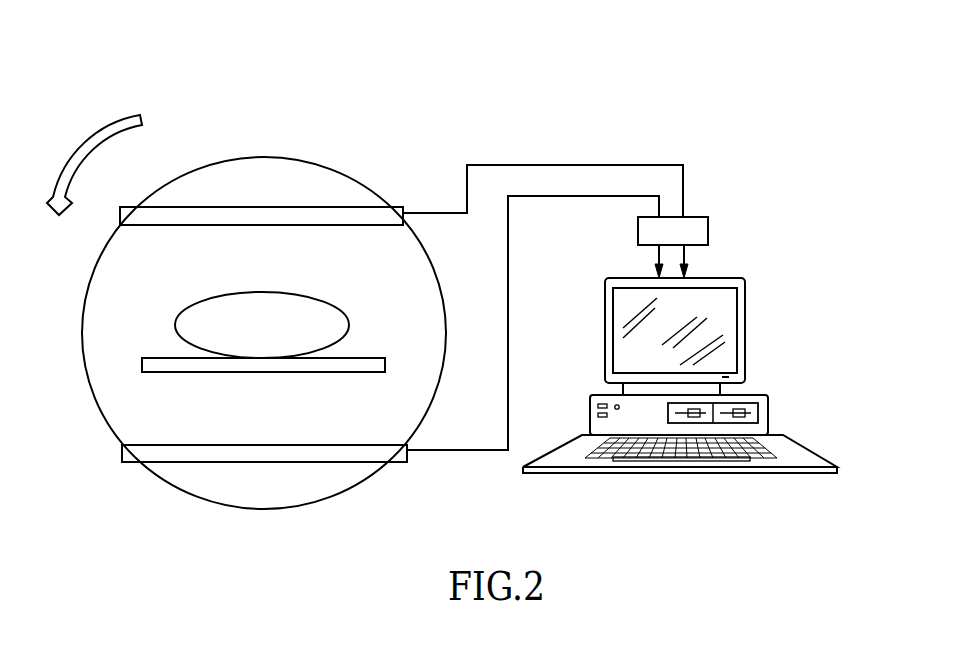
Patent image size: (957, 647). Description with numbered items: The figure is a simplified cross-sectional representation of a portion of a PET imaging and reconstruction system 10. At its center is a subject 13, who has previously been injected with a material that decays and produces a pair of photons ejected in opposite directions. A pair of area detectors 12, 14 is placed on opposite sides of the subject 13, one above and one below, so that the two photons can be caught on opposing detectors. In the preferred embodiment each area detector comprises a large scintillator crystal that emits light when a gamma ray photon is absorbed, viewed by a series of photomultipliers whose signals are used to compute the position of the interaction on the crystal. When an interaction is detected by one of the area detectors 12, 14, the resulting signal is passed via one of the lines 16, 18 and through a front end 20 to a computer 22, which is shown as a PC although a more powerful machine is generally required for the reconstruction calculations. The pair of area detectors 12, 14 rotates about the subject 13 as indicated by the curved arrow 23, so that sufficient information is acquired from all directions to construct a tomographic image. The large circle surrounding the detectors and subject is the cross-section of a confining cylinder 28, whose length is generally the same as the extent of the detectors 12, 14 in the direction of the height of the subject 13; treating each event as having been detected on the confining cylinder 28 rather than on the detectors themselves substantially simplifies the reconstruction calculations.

The PET imaging and reconstruction system 10 is at (237, 94).
The area detector 12 is at (120, 213).
The subject 13 is at (198, 320).
The area detector 14 is at (122, 447).
The line 16 is at (468, 452).
The line 18 is at (565, 163).
The front end 20 is at (710, 232).
The computer 22 is at (770, 407).
The arrow 23 is at (83, 140).
The confining cylinder 28 is at (268, 157).